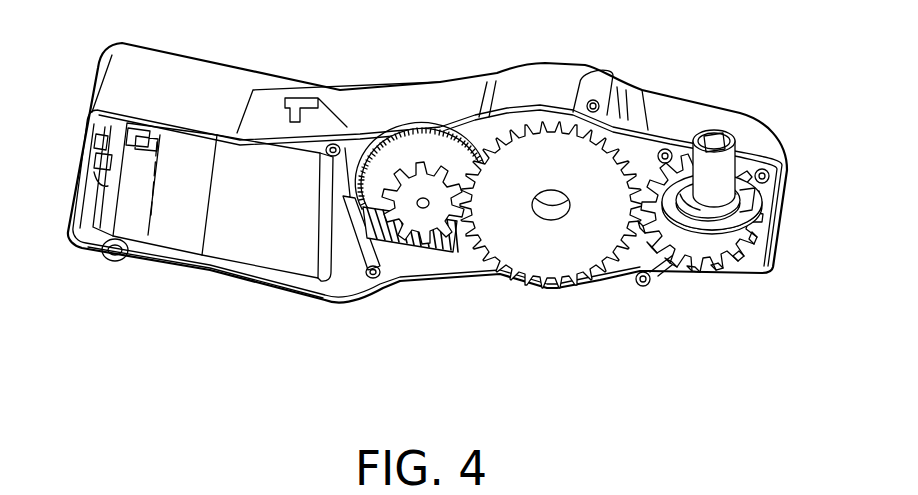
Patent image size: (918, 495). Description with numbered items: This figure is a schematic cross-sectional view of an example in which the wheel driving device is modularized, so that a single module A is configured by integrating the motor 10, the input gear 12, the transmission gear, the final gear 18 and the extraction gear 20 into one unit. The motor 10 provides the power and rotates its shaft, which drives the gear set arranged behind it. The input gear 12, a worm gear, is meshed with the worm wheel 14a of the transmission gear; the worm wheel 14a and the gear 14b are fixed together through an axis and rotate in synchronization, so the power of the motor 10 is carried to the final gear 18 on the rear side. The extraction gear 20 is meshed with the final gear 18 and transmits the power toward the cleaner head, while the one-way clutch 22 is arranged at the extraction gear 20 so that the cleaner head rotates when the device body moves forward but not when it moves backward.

The module A is at (192, 76).
The motor 10 is at (263, 249).
The input gear 12 is at (403, 247).
The worm wheel 14a is at (402, 146).
The gear 14b is at (433, 246).
The final gear 18 is at (552, 250).
The extraction gear 20 is at (712, 247).
The one-way clutch 22 is at (747, 208).